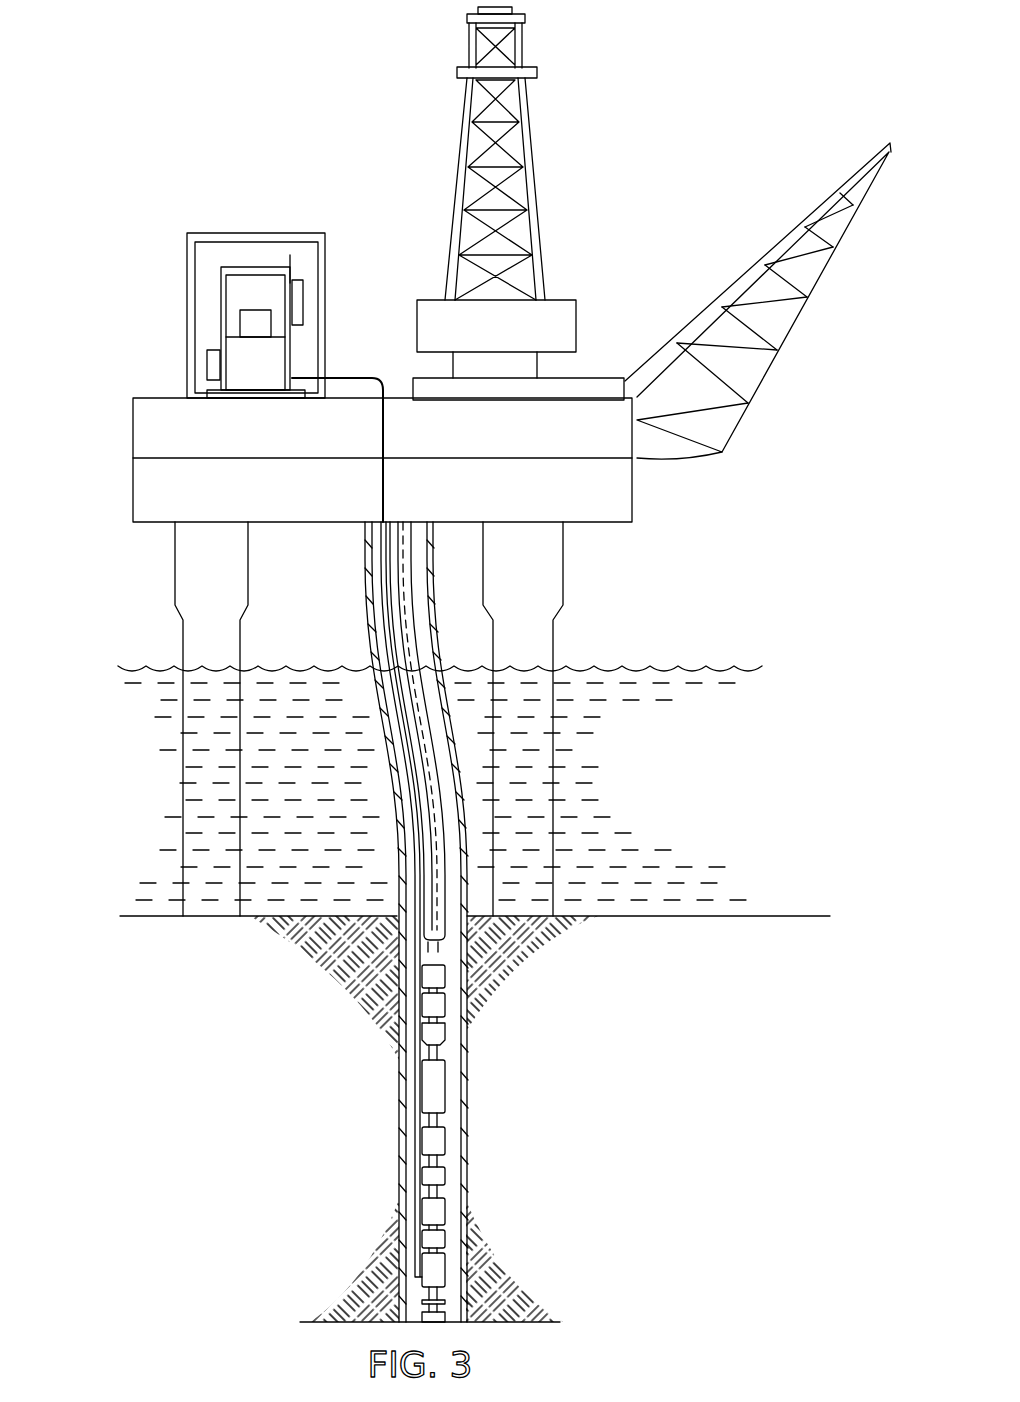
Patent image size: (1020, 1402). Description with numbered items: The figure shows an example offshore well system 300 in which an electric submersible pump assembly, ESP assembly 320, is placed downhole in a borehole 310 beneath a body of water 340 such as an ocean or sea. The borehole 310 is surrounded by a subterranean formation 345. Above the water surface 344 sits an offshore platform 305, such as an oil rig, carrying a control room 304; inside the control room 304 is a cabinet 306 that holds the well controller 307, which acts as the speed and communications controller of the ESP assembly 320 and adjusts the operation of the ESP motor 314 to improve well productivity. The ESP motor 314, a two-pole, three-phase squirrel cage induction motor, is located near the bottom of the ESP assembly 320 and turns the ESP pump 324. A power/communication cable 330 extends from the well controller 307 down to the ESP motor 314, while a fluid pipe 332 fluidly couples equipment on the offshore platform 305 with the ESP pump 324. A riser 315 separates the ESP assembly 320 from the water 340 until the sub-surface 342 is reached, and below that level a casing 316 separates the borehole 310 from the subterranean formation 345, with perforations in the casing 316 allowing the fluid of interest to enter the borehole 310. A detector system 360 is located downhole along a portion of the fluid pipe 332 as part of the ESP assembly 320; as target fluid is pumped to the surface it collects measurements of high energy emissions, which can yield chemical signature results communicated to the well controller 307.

The offshore well system 300 is at (266, 92).
The control room 304 is at (255, 233).
The offshore platform 305 is at (132, 426).
The cabinet 306 is at (220, 300).
The well controller 307 is at (240, 328).
The borehole 310 is at (462, 1170).
The ESP motor 314 is at (446, 1280).
The riser 315 is at (397, 852).
The casing 316 is at (398, 1170).
The ESP assembly 320 is at (476, 1100).
The ESP pump 324 is at (440, 1052).
The power/communication cable 330 is at (368, 596).
The fluid pipe 332 is at (378, 612).
The body of water 340 is at (652, 782).
The sub-surface 342 is at (775, 912).
The water surface 344 is at (680, 665).
The subterranean formation 345 is at (254, 1127).
The detector system 360 is at (446, 978).